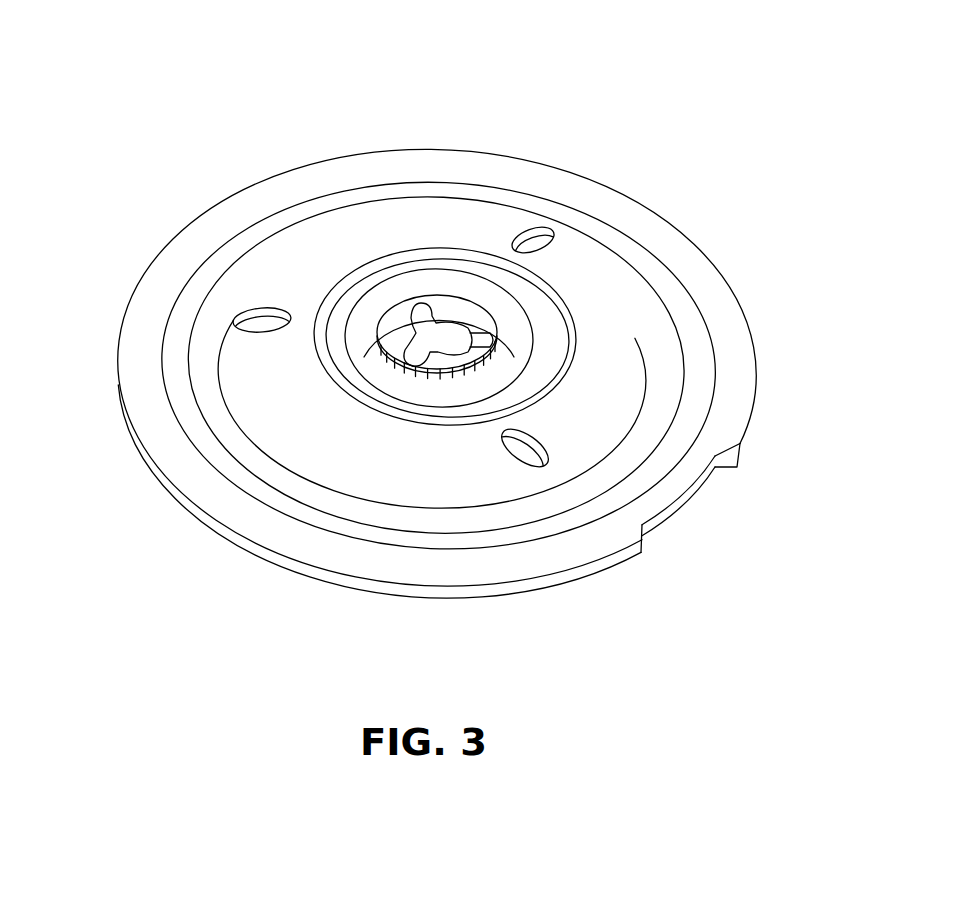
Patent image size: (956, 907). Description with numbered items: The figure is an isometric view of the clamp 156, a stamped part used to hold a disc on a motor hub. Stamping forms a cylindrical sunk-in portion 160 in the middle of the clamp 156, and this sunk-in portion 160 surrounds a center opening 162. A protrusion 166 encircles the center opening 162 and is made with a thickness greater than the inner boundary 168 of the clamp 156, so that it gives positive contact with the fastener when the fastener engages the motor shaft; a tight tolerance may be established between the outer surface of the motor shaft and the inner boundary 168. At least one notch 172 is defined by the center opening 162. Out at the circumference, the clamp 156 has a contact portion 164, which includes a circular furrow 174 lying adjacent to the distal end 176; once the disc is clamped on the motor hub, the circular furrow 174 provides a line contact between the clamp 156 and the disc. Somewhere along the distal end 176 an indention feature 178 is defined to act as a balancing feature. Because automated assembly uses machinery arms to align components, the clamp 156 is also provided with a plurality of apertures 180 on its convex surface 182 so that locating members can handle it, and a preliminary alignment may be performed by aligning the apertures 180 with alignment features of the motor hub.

The clamp 156 is at (373, 108).
The cylindrical sunk-in portion 160 is at (545, 346).
The center opening 162 is at (450, 339).
The contact portion 164 is at (190, 408).
The protrusion 166 is at (392, 343).
The inner boundary 168 is at (440, 320).
The notch 172 is at (418, 316).
The circular furrow 174 is at (682, 355).
The distal end 176 is at (165, 298).
The indention feature 178 is at (700, 497).
The apertures 180 is at (537, 456).
The convex surface 182 is at (375, 458).